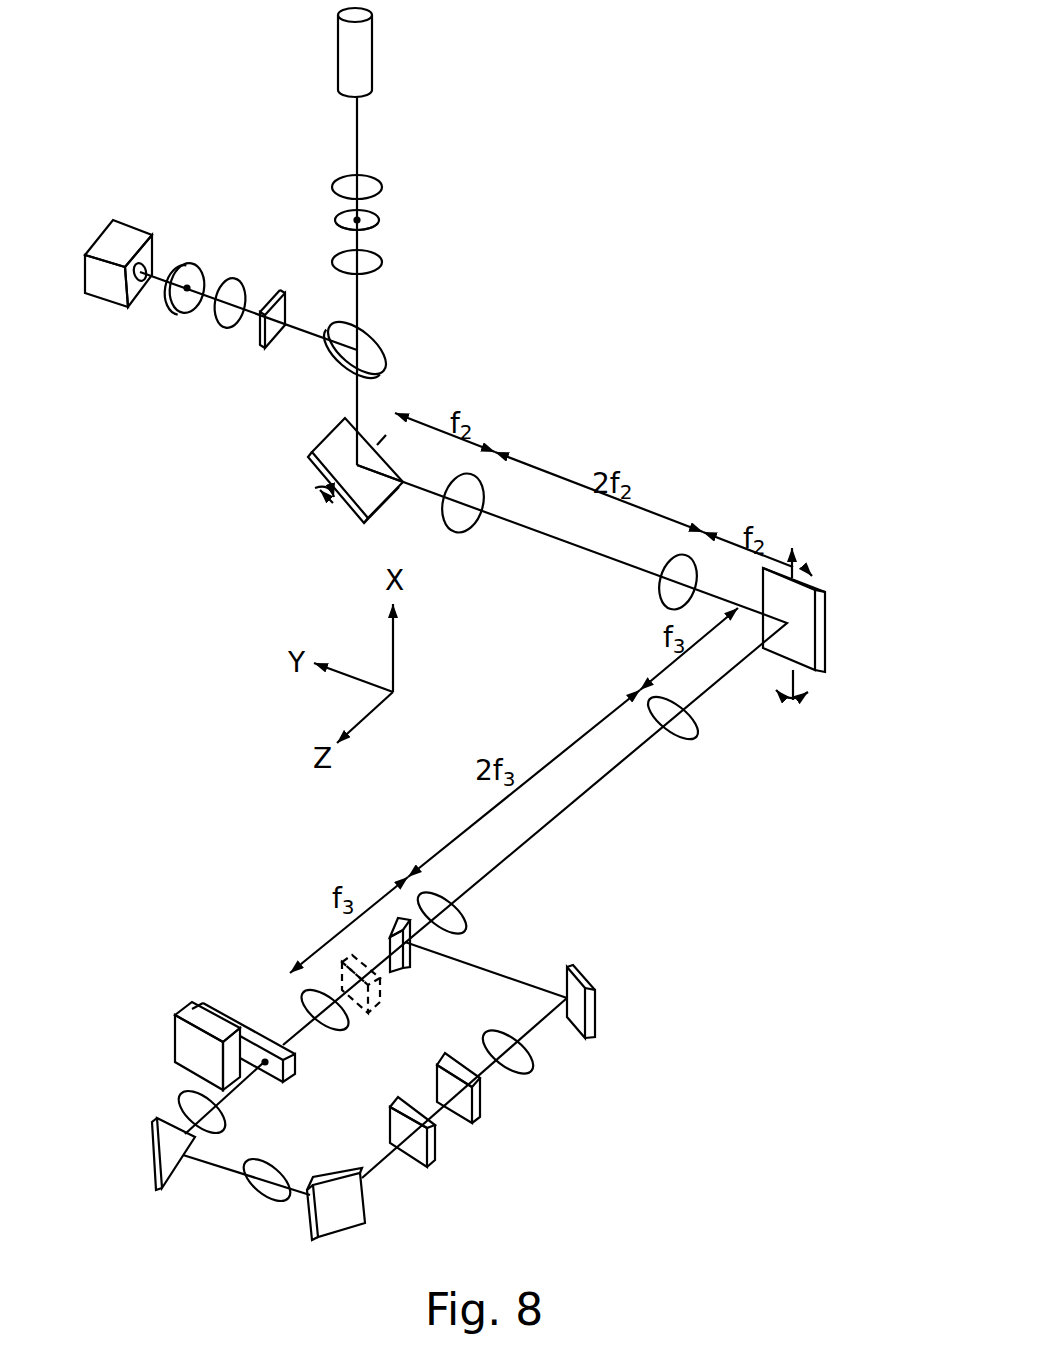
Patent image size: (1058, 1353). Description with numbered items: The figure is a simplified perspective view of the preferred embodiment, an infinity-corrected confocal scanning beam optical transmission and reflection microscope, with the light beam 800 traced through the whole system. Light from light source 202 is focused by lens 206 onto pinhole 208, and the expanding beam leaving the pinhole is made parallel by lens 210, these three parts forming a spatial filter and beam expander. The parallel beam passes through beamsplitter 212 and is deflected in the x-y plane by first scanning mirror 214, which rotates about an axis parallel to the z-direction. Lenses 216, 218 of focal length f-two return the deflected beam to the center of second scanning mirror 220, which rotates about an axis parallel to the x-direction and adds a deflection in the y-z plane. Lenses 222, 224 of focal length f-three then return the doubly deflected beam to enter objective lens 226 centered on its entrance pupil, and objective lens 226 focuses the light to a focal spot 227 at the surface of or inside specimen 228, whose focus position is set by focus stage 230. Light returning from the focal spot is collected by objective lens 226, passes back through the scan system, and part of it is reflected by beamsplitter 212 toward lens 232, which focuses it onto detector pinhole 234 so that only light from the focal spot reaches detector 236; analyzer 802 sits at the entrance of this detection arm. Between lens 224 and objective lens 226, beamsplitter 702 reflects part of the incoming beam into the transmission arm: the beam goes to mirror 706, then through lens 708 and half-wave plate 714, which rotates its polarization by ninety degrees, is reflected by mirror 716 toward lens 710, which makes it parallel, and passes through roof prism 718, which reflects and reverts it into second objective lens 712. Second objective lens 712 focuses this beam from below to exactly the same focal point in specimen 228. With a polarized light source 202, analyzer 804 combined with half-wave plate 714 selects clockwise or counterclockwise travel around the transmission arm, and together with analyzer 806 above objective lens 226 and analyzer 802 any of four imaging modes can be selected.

The light source 202 is at (376, 37).
The lens 206 is at (383, 190).
The pinhole 208 is at (380, 222).
The lens 210 is at (383, 265).
The beamsplitter 212 is at (385, 362).
The first scanning mirror 214 is at (330, 435).
The lens 216 is at (453, 533).
The lens 218 is at (657, 600).
The second scanning mirror 220 is at (827, 632).
The lens 222 is at (688, 742).
The lens 224 is at (468, 930).
The objective lens 226 is at (300, 989).
The focal spot 227 is at (265, 1062).
The specimen 228 is at (297, 1070).
The focus stage 230 is at (173, 1030).
The lens 232 is at (225, 328).
The detector pinhole 234 is at (182, 312).
The detector 236 is at (108, 303).
The beamsplitter 702 is at (410, 950).
The mirror 706 is at (597, 1008).
The lens 708 is at (537, 1075).
The lens 710 is at (248, 1205).
The second objective lens 712 is at (175, 1097).
The half-wave plate 714 is at (480, 1110).
The mirror 716 is at (365, 1213).
The roof prism 718 is at (173, 1180).
The light beam 800 is at (360, 313).
The analyzer 802 is at (287, 327).
The analyzer 804 is at (437, 1152).
The analyzer 806 is at (380, 1015).